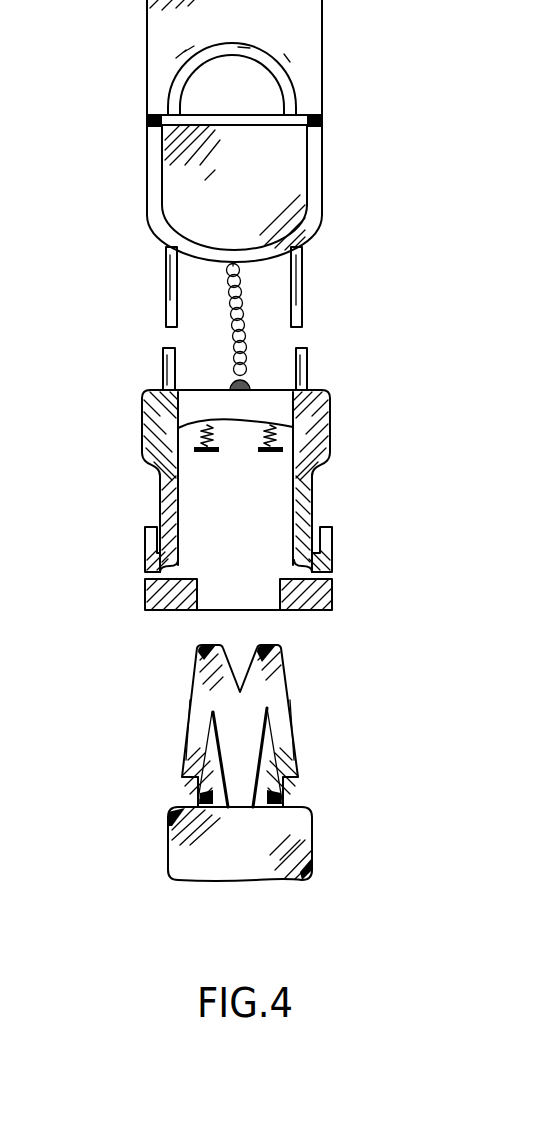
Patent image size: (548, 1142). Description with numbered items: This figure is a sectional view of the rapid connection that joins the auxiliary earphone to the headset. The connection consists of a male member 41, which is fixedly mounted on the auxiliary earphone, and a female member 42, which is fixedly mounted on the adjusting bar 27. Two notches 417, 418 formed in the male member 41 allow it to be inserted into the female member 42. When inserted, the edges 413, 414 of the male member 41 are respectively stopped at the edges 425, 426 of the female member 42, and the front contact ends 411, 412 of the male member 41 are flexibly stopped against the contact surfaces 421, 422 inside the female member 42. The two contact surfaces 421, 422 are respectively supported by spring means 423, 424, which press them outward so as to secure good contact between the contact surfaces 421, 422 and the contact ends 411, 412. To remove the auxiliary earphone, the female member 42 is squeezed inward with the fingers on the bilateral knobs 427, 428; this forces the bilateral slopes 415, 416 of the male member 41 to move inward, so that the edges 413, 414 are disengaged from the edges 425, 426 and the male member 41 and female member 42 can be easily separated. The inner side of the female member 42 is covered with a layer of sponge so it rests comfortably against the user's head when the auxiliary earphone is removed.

The adjusting bar 27 is at (307, 278).
The male member 41 is at (276, 755).
The front contact end 411 is at (213, 646).
The front contact end 412 is at (268, 645).
The edge 413 is at (190, 778).
The edge 414 is at (287, 782).
The slope 415 is at (180, 757).
The slope 416 is at (293, 757).
The notch 417 is at (213, 740).
The notch 418 is at (268, 740).
The female member 42 is at (256, 482).
The contact surface 421 is at (205, 452).
The contact surface 422 is at (300, 455).
The spring means 423 is at (203, 427).
The spring means 424 is at (276, 424).
The edge 425 is at (165, 598).
The edge 426 is at (283, 583).
The knob 427 is at (152, 553).
The knob 428 is at (325, 550).